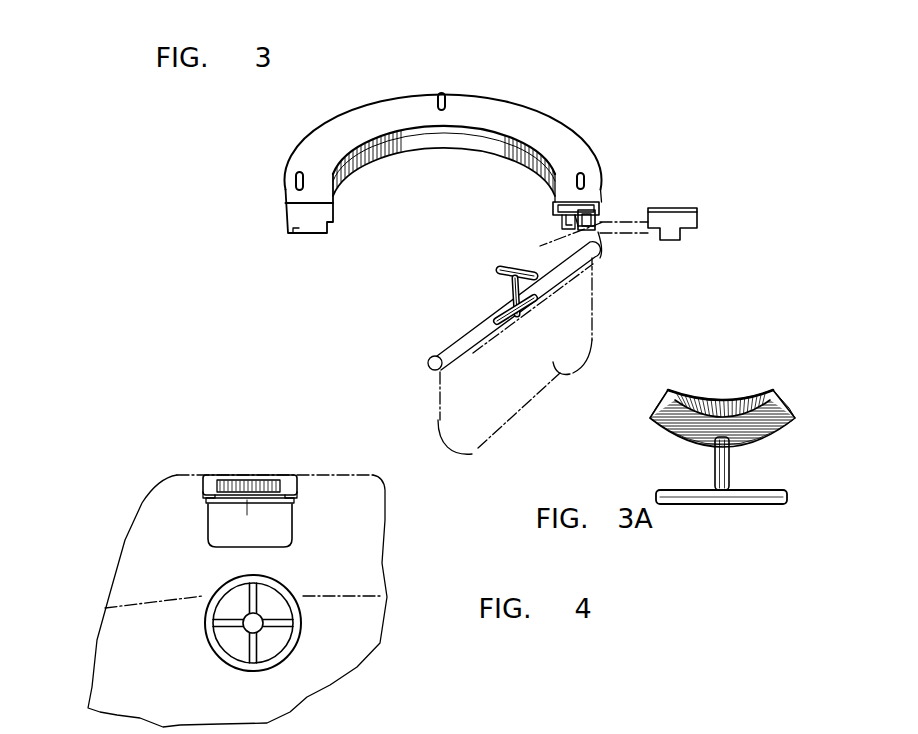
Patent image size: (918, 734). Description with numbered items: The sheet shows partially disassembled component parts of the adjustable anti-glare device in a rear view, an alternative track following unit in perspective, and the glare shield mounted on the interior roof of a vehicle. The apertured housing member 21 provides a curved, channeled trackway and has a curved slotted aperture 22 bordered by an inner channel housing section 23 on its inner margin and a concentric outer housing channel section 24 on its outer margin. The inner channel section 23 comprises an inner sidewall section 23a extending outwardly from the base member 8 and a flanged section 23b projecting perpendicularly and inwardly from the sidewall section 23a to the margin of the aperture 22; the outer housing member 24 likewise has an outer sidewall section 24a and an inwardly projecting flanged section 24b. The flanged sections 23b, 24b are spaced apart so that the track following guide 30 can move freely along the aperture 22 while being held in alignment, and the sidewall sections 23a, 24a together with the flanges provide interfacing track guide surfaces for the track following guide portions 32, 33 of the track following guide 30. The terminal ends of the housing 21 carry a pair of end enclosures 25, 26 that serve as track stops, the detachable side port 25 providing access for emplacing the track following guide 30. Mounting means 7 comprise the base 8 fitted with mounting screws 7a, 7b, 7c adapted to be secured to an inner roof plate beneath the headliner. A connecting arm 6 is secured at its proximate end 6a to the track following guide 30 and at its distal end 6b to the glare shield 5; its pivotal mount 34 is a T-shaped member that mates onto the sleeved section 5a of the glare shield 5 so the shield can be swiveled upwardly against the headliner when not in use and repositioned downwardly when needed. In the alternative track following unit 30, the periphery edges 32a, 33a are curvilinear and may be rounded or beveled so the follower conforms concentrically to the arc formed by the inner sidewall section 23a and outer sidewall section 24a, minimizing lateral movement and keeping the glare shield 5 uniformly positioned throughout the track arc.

In FIG. 3, the glare shield 5 is at (522, 348).
In FIG. 4, the glare shield 5 is at (235, 532).
In FIG. 3, the sleeved section 5a is at (455, 357).
In FIG. 4, the sleeved section 5a is at (223, 512).
In FIG. 3, the connecting arm 6 is at (476, 291).
In FIG. 3A, the connecting arm 6 is at (735, 471).
In FIG. 4, the connecting arm 6 is at (247, 501).
In FIG. 3, the proximate end 6a is at (509, 285).
In FIG. 3, the distal end 6b is at (507, 300).
In FIG. 3, the mounting means 7 is at (417, 122).
In FIG. 3, the mounting screw 7a is at (296, 178).
In FIG. 3, the mounting screw 7b is at (438, 97).
In FIG. 3, the mounting screw 7c is at (603, 180).
In FIG. 3, the base member 8 is at (586, 203).
In FIG. 3, the apertured housing member 21 is at (285, 204).
In FIG. 4, the apertured housing member 21 is at (250, 480).
In FIG. 3, the curved slotted aperture 22 is at (598, 246).
In FIG. 3, the inner channel housing section 23 is at (525, 199).
In FIG. 3, the inner sidewall section 23a is at (553, 207).
In FIG. 3, the flanged section 23b is at (561, 221).
In FIG. 3, the outer housing channel section 24 is at (630, 238).
In FIG. 3, the outer sidewall section 24a is at (597, 229).
In FIG. 3, the flanged section 24b is at (601, 242).
In FIG. 3, the end enclosure 25 is at (700, 219).
In FIG. 4, the end enclosure 25 is at (285, 477).
In FIG. 3, the end enclosure 26 is at (299, 234).
In FIG. 4, the end enclosure 26 is at (207, 477).
In FIG. 3, the track following guide 30 is at (476, 306).
In FIG. 3A, the track following guide 30 is at (718, 443).
In FIG. 3, the track following guide portion 32 is at (499, 271).
In FIG. 3A, the curved periphery edge 32a is at (738, 399).
In FIG. 3, the track following guide portion 33 is at (506, 268).
In FIG. 3A, the track following guide portion 33 is at (702, 407).
In FIG. 3A, the curved periphery edge 33a is at (668, 447).
In FIG. 3, the pivotal mount 34 is at (513, 315).
In FIG. 3A, the pivotal mount 34 is at (716, 506).